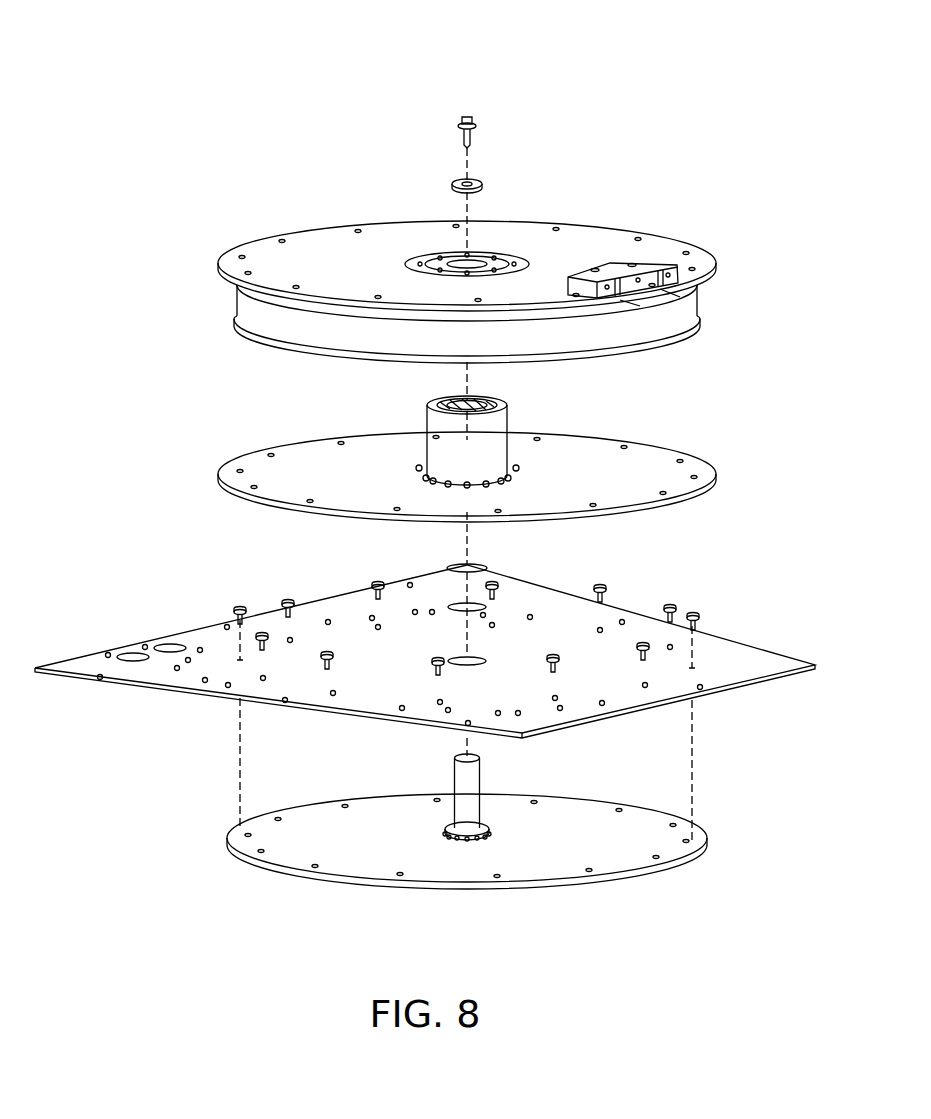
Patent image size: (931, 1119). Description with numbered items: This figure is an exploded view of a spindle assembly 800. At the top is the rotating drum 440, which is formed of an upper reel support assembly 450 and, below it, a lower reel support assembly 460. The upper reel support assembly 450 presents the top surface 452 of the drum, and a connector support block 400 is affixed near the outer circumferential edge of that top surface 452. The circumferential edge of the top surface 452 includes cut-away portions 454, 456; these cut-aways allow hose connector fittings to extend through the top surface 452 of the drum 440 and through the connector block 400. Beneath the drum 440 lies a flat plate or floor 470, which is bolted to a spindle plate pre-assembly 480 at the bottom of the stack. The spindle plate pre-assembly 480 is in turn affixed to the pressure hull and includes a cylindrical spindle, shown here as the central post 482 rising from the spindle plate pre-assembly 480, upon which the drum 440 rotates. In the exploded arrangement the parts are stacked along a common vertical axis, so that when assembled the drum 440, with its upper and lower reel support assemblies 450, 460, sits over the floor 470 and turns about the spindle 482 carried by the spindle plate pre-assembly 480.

The spindle assembly 800 is at (214, 72).
The rotating drum 440 is at (130, 223).
The upper reel support assembly 450 is at (250, 308).
The top surface 452 is at (335, 242).
The connector support block 400 is at (648, 262).
The cut-away portion 454 is at (680, 292).
The cut-away portion 456 is at (628, 298).
The lower reel support assembly 460 is at (266, 455).
The flat plate or floor 470 is at (140, 677).
The spindle plate pre-assembly 480 is at (234, 850).
The center post 482 is at (472, 790).